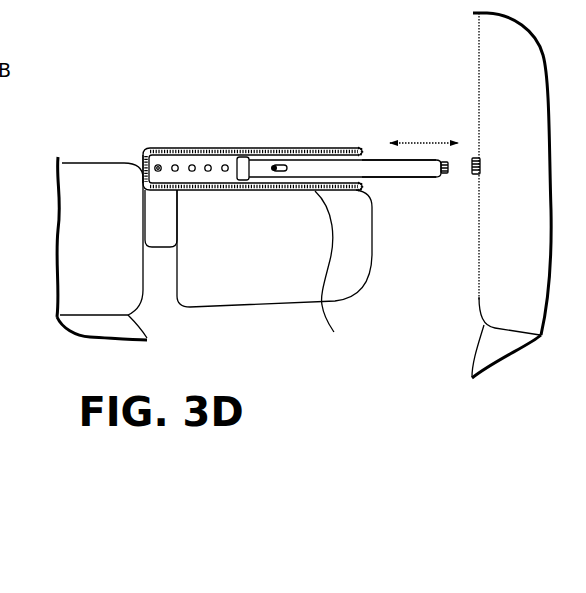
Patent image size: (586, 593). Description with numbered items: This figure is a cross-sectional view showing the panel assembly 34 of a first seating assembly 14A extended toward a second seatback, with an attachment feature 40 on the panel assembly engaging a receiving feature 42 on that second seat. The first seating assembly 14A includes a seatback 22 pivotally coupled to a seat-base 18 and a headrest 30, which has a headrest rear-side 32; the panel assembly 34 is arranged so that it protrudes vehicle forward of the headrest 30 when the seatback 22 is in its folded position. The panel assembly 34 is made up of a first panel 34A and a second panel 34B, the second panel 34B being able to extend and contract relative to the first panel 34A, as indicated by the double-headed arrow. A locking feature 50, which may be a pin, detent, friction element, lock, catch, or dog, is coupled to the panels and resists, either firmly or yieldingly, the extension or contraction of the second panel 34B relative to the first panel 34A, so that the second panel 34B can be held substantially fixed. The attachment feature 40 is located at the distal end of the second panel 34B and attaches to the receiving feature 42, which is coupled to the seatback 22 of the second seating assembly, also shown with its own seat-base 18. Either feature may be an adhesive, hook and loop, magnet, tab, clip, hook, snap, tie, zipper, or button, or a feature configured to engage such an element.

The first seating assembly 14A is at (143, 115).
The seat-base 18 is at (110, 322).
The seatback 22 is at (90, 238).
The headrest 30 is at (278, 254).
The headrest rear-side 32 is at (334, 272).
The panel assembly 34 is at (193, 143).
The first panel 34A is at (288, 148).
The second panel 34B is at (367, 166).
The attachment feature 40 is at (447, 174).
The receiving feature 42 is at (470, 176).
The locking feature 50 is at (156, 166).